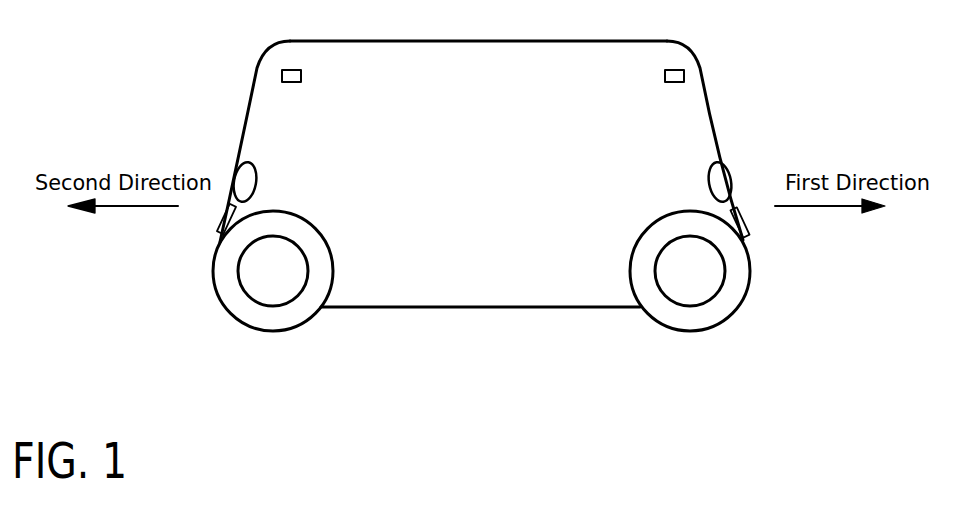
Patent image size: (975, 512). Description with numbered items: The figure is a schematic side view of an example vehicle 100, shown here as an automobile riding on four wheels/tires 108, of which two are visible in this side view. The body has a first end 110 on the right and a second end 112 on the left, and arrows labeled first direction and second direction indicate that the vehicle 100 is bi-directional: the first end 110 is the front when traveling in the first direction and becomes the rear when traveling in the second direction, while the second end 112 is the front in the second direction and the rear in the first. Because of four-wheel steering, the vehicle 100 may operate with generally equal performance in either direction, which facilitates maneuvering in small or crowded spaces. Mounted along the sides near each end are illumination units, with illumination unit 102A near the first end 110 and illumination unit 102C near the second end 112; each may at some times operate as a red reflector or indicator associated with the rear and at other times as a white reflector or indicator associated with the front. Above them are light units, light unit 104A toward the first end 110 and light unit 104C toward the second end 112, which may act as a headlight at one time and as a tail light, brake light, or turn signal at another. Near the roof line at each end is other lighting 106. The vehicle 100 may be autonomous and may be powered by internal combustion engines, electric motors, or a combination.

The vehicle 100 is at (483, 173).
The illumination unit 102A is at (748, 230).
The illumination unit 102C is at (217, 223).
The light unit 104A is at (723, 157).
The light unit 104C is at (243, 157).
The other lighting 106 is at (283, 70).
The wheels/tires 108 is at (748, 283).
The first end 110 is at (715, 108).
The second end 112 is at (247, 110).